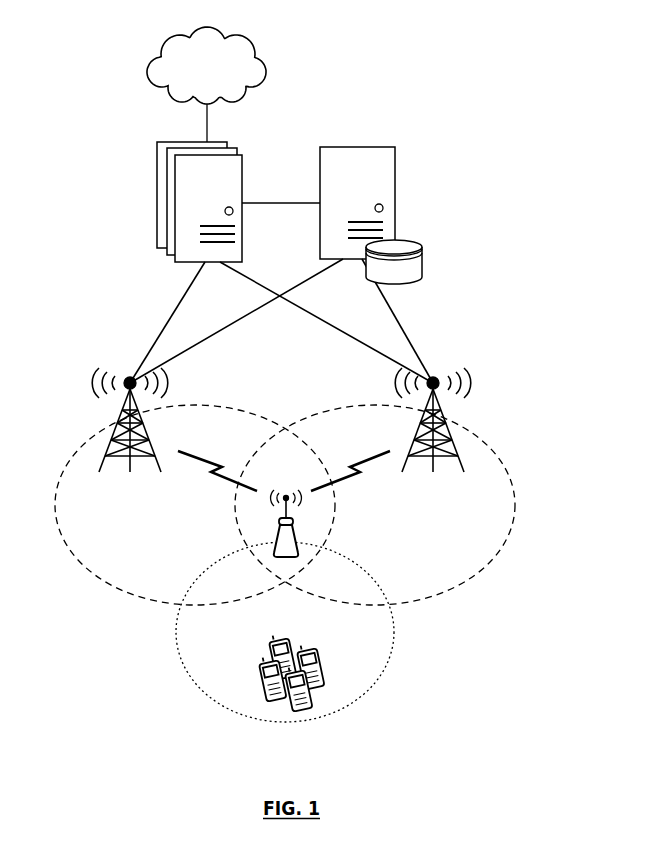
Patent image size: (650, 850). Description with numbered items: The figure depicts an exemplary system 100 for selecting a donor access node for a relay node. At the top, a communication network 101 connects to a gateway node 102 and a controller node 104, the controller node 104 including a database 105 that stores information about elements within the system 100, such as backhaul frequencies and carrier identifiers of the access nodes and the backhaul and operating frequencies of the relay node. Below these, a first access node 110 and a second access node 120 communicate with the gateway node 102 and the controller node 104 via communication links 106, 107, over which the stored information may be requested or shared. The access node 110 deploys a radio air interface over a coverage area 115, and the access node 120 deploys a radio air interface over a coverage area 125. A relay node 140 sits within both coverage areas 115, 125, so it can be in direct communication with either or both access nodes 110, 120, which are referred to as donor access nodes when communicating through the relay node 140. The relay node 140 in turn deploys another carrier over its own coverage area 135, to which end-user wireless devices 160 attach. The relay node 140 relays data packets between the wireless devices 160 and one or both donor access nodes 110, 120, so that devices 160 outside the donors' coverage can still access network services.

The system 100 is at (340, 42).
The communication network 101 is at (224, 77).
The gateway node 102 is at (157, 176).
The controller node 104 is at (395, 190).
The database 105 is at (423, 262).
The communication link 106 is at (262, 286).
The communication link 107 is at (232, 323).
The access node 110 is at (110, 445).
The coverage area 115 is at (120, 590).
The access node 120 is at (455, 450).
The coverage area 125 is at (445, 590).
The coverage area 135 is at (350, 704).
The relay node 140 is at (296, 528).
The end-user wireless devices 160 is at (250, 665).